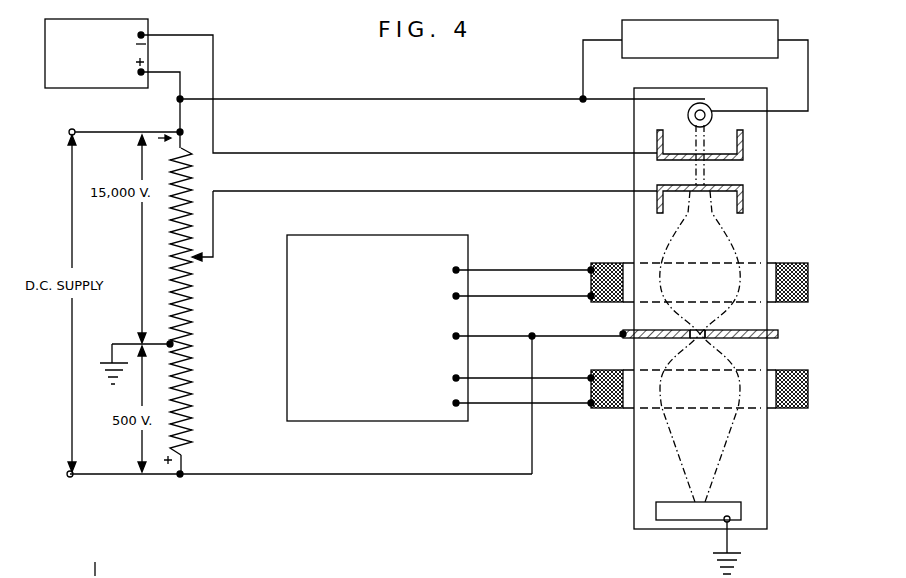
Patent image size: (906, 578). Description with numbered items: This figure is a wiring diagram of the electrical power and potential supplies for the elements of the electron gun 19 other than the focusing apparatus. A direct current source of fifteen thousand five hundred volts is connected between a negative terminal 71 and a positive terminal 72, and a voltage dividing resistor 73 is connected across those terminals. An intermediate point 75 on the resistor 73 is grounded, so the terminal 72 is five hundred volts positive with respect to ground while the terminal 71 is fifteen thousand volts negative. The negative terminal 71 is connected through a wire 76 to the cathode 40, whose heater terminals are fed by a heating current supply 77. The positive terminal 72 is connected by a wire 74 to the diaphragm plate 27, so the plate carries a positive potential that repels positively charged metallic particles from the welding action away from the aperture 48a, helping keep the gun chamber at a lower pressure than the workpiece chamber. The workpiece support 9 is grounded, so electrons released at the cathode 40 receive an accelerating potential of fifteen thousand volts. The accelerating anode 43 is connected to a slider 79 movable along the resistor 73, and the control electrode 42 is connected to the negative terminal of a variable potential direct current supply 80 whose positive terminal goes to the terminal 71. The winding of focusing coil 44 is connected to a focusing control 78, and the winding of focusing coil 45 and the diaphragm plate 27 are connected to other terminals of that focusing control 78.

The variable potential direct current supply 80 is at (149, 23).
The heating current supply 77 is at (622, 30).
The wire 76 is at (404, 80).
The wire 74 is at (440, 476).
The negative terminal 71 is at (70, 129).
The positive terminal 72 is at (70, 478).
The voltage dividing resistor 73 is at (185, 315).
The slider 79 is at (211, 254).
The intermediate point 75 is at (168, 343).
The focusing control 78 is at (440, 237).
The electron gun 19 is at (628, 218).
The cathode 40 is at (703, 103).
The control electrode 42 is at (743, 150).
The accelerating anode 43 is at (743, 207).
The focusing coil 44 is at (608, 263).
The focusing coil 45 is at (607, 408).
The diaphragm plate 27 is at (786, 322).
The aperture 48a is at (700, 340).
The workpiece support 9 is at (683, 512).